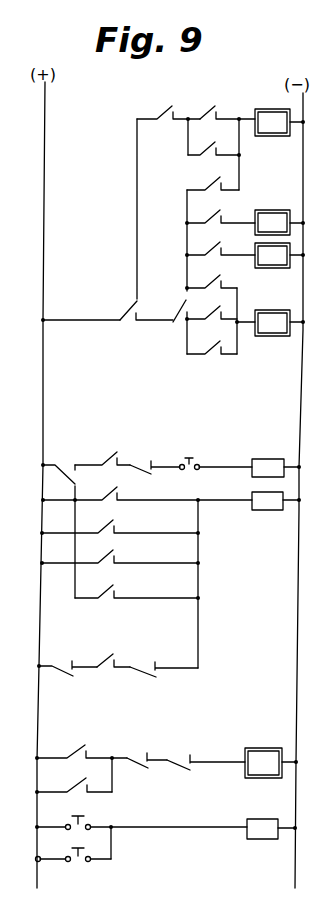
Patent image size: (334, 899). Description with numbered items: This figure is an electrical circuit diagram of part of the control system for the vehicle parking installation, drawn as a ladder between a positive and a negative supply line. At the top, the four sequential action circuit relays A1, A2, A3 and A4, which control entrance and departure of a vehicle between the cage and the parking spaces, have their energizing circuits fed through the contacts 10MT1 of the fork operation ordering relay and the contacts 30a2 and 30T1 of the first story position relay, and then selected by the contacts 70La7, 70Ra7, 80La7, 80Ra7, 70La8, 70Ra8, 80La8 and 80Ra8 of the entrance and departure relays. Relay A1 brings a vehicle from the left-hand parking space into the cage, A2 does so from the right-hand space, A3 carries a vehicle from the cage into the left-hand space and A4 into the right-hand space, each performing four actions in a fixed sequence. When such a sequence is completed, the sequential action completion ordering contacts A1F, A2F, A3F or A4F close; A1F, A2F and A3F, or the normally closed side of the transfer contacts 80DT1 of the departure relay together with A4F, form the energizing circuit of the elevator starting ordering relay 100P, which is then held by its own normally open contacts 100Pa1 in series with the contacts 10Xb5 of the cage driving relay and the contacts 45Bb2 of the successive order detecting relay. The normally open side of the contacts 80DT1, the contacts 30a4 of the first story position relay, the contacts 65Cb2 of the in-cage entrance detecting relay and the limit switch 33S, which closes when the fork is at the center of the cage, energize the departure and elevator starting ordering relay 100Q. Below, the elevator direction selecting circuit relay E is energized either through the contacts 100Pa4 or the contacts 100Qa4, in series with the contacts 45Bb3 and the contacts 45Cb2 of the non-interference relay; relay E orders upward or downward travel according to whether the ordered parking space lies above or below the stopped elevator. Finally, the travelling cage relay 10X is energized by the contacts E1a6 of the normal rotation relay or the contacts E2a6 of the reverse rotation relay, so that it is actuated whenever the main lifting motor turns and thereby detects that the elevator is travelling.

The contacts of fork operation ordering relay 10MT1 is at (107, 307).
The timer contacts of first story position relay 30T1 is at (168, 309).
The contacts of first story position relay 30a2 is at (168, 106).
The entrance relay contacts 70La7 is at (226, 106).
The sequential action circuit relay A1 is at (279, 113).
The entrance relay contacts 70Ra7 is at (213, 140).
The departure relay contacts 80La7 is at (210, 175).
The departure relay contacts 80Ra7 is at (221, 208).
The sequential action circuit relay A2 is at (279, 213).
The entrance relay contacts 70La8 is at (221, 240).
The sequential action circuit relay A3 is at (279, 266).
The entrance relay contacts 70Ra8 is at (212, 274).
The departure relay contacts 80La8 is at (221, 307).
The sequential action circuit relay A4 is at (279, 334).
The departure relay contacts 80Ra8 is at (212, 340).
The transfer contacts of departure relay 80DT1 is at (66, 463).
The contacts of first story position relay 30a4 is at (103, 447).
The contacts of in-cage entrance detecting relay 65Cb2 is at (155, 477).
The limit switch 33S is at (215, 453).
The departure and elevator starting ordering relay 100Q is at (273, 459).
The sequential action completion ordering contacts A1F is at (147, 487).
The elevator starting ordering relay 100P is at (272, 509).
The sequential action completion ordering contacts A2F is at (120, 520).
The sequential action completion ordering contacts A3F is at (120, 550).
The sequential action completion ordering contacts A4F is at (136, 584).
The contacts of cage driving relay 10Xb5 is at (67, 662).
The normally open contacts of elevator starting ordering relay 100Pa1 is at (110, 652).
The contacts of successive entrance and departure order detecting relay 45Bb2 is at (163, 663).
The contacts of elevator starting relay 100Pa4 is at (82, 746).
The contacts of successive entrance and departure order detecting relay 45Bb3 is at (141, 754).
The contacts of non-interference relay 45Cb2 is at (206, 755).
The elevator direction selecting circuit relay E is at (270, 754).
The contacts of departure and elevator starting relay 100Qa4 is at (74, 781).
The contacts of main lifting motor normal rotation relay E1a6 is at (142, 816).
The travelling cage relay 10X is at (271, 820).
The contacts of main lifting motor reverse rotation relay E2a6 is at (74, 848).